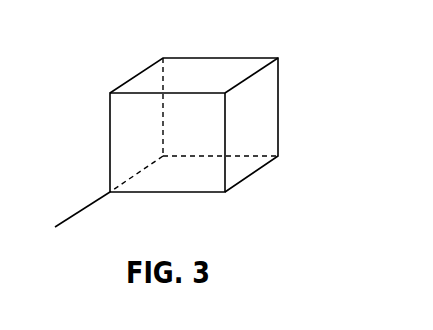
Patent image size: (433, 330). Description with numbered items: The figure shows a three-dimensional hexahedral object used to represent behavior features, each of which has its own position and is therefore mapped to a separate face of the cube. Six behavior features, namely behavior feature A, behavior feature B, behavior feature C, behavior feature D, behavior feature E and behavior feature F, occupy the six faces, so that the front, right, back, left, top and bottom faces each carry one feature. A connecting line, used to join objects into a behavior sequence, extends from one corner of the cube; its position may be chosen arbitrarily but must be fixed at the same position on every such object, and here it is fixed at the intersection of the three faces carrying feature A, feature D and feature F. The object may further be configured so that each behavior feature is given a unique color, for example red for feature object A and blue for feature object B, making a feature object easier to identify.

The behavior feature A is at (170, 138).
The behavior feature B is at (254, 125).
The behavior feature C is at (212, 107).
The behavior feature D is at (139, 125).
The behavior feature E is at (190, 76).
The behavior feature F is at (191, 174).